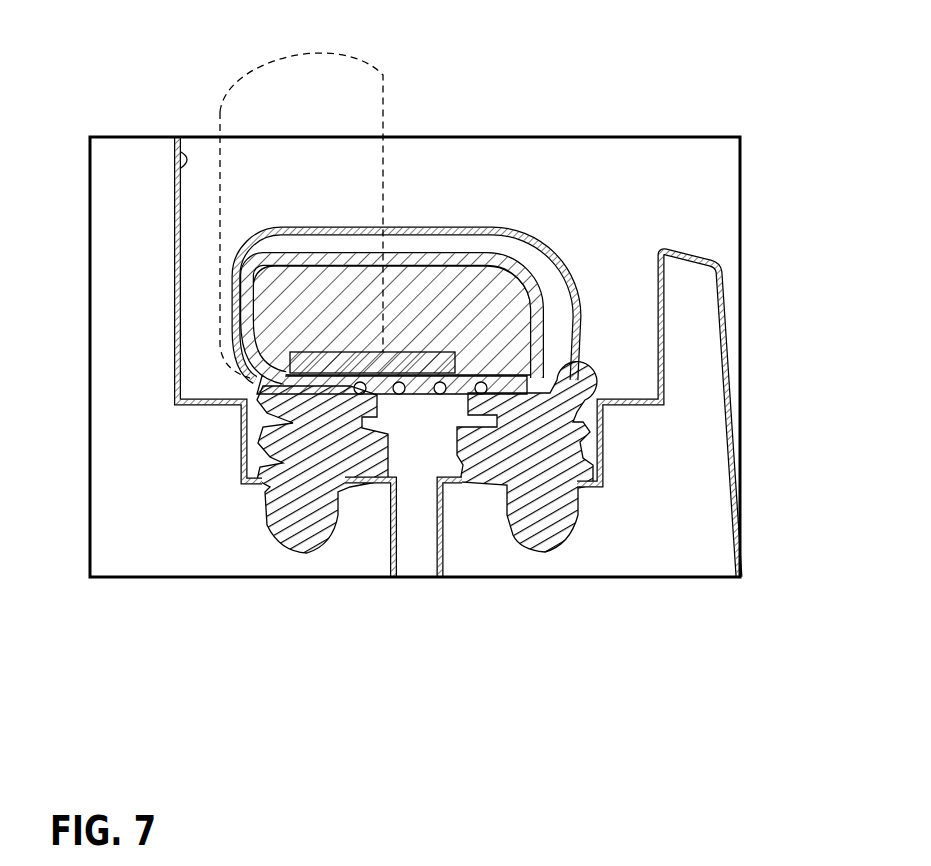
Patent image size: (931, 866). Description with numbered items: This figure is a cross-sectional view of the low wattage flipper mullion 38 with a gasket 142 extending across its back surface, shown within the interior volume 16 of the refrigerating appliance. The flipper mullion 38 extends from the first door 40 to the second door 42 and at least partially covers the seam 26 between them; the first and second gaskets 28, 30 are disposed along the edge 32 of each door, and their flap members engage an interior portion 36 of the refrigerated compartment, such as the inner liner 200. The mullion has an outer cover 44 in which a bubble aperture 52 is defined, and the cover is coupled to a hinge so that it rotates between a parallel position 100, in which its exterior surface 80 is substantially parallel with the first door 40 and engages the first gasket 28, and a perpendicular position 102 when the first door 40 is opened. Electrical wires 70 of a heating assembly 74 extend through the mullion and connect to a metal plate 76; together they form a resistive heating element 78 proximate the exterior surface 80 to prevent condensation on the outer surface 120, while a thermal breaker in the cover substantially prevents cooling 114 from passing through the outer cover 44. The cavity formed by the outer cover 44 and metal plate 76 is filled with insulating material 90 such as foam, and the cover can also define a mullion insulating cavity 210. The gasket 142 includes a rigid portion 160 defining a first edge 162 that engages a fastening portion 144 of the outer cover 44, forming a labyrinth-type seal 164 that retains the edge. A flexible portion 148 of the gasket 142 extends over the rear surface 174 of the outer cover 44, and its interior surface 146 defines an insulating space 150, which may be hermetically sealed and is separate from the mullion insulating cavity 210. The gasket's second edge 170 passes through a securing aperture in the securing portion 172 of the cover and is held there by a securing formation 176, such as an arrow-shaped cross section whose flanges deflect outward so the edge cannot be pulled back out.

The interior volume 16 is at (518, 112).
The seam 26 is at (407, 587).
The first gasket 28 is at (545, 520).
The second gasket 30 is at (283, 548).
The edge 32 is at (462, 487).
The interior portion 36 is at (180, 160).
The flipper mullion 38 is at (218, 328).
The first door 40 is at (731, 390).
The second door 42 is at (176, 315).
The outer cover 44 is at (342, 245).
The bubble aperture 52 is at (557, 240).
The electrical wires 70 is at (435, 243).
The heating assembly 74 is at (408, 405).
The metal plate 76 is at (407, 402).
The resistive heating element 78 is at (460, 265).
The exterior surface 80 is at (421, 396).
The insulating material 90 is at (320, 290).
The parallel position 100 is at (603, 303).
The perpendicular position 102 is at (216, 110).
The cooling 114 is at (596, 213).
The outer surface 120 is at (580, 282).
The gasket 142 is at (587, 286).
The fastening portion 144 is at (545, 358).
The interior surface 146 is at (550, 240).
The flexible portion 148 is at (565, 260).
The insulating space 150 is at (448, 363).
The rigid portion 160 is at (610, 403).
The first edge 162 is at (540, 365).
The labyrinth-type seal 164 is at (610, 400).
The second edge 170 is at (247, 297).
The securing portion 172 is at (250, 227).
The rear surface 174 is at (293, 252).
The securing formation 176 is at (233, 255).
The inner liner 200 is at (185, 400).
The mullion insulating cavity 210 is at (277, 337).